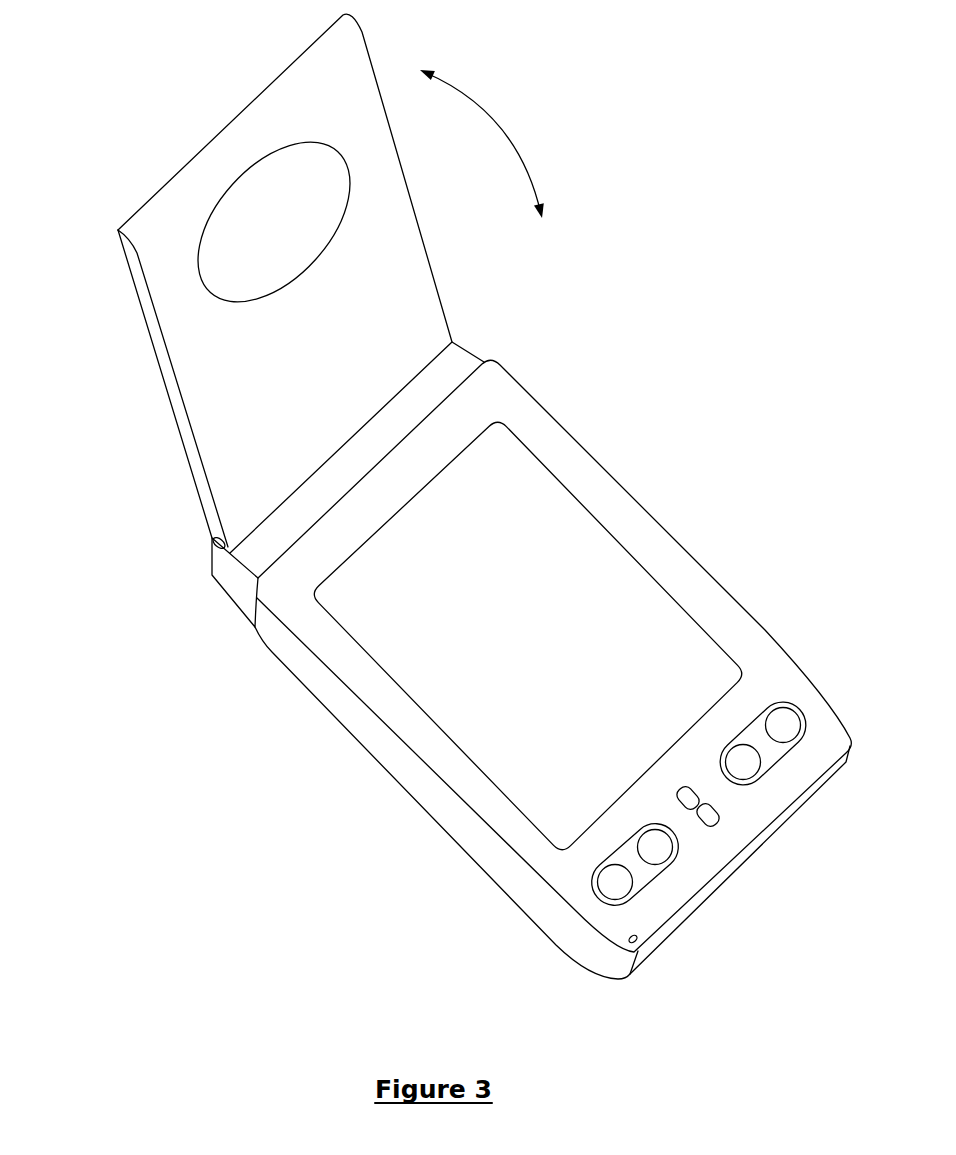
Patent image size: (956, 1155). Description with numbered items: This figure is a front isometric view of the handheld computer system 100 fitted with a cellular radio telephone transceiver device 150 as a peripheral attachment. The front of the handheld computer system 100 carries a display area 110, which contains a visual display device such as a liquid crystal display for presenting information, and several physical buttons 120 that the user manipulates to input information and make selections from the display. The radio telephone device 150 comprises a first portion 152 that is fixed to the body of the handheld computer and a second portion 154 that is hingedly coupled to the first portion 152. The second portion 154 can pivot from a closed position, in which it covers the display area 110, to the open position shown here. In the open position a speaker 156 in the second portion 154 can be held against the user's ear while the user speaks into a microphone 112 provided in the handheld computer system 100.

The handheld computer system 100 is at (703, 478).
The display area 110 is at (527, 636).
The microphone 112 is at (649, 933).
The physical buttons 120 is at (783, 727).
The cellular radio telephone transceiver device 150 is at (155, 573).
The first portion 152 is at (232, 587).
The second portion 154 is at (196, 445).
The speaker 156 is at (243, 202).